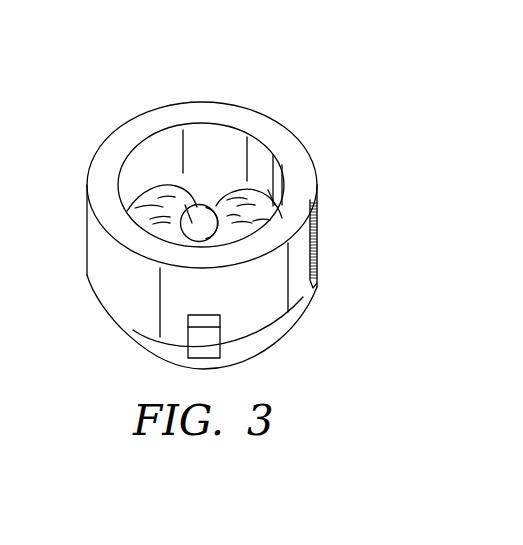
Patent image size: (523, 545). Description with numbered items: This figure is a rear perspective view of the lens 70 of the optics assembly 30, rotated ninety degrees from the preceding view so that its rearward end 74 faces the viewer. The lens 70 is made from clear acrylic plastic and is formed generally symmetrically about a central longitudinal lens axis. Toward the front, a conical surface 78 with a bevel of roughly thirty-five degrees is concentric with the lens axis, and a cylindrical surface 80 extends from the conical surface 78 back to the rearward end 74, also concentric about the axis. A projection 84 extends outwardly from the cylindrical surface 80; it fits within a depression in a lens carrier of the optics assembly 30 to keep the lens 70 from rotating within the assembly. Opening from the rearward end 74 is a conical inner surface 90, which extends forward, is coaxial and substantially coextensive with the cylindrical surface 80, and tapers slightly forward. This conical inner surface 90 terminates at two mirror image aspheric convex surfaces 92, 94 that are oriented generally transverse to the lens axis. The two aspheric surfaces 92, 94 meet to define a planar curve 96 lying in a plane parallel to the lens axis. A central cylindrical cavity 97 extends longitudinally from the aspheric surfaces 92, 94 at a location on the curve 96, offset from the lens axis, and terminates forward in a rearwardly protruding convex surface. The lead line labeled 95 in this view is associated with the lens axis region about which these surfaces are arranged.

The optics assembly 30 is at (257, 103).
The lens 70 is at (93, 331).
The rearward end 74 is at (282, 141).
The conical surface 78 is at (272, 325).
The cylindrical surface 80 is at (316, 250).
The projection 84 is at (198, 340).
The conical inner surface 90 is at (143, 160).
The aspheric convex surface 92 is at (163, 207).
The aspheric convex surface 94 is at (268, 222).
The slit 95 is at (268, 190).
The planar curve 96 is at (198, 205).
The central cylindrical cavity 97 is at (185, 205).